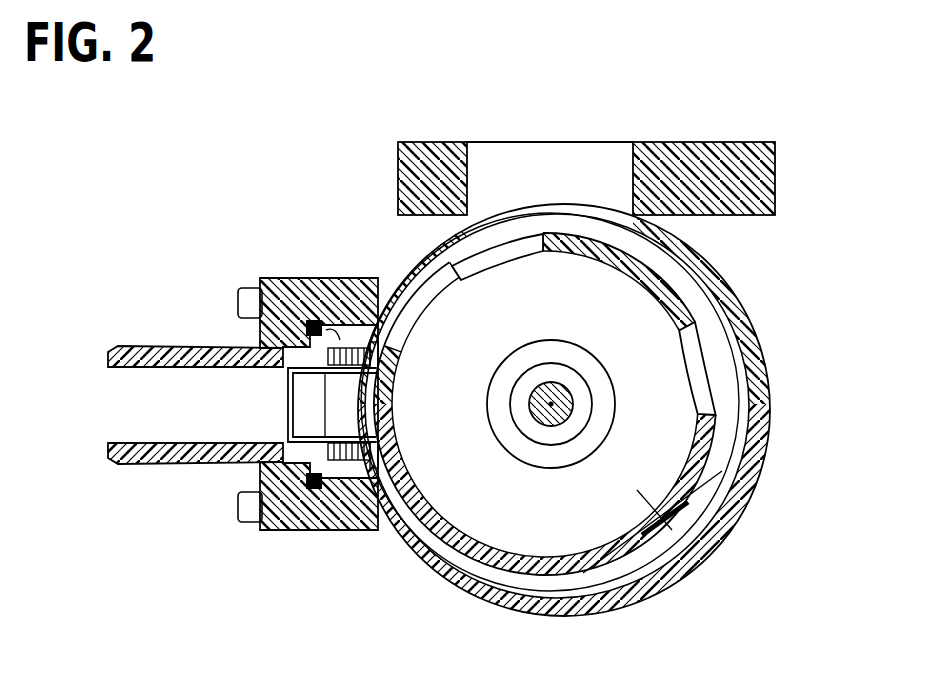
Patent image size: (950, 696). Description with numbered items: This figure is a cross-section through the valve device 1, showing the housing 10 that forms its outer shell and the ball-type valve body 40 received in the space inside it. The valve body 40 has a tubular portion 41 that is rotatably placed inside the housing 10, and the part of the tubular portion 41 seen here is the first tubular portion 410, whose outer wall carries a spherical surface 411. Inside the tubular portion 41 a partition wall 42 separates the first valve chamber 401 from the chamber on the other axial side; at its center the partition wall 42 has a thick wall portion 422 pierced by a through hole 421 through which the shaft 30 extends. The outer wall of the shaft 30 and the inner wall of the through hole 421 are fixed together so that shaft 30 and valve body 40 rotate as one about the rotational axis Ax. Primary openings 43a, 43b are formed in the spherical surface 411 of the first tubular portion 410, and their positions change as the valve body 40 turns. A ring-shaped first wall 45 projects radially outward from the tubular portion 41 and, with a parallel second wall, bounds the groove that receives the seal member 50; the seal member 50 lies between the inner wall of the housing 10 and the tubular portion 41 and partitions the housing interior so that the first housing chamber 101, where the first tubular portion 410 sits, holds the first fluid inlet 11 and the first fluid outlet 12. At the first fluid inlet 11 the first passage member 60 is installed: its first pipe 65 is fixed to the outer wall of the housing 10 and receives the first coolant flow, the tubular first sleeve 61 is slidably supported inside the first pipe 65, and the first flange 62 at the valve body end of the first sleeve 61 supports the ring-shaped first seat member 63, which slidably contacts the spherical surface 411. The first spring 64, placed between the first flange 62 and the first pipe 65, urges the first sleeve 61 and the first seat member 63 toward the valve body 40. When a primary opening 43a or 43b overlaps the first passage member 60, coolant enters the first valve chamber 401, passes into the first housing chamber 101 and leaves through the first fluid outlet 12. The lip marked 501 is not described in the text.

The valve device 1 is at (293, 80).
The housing 10 is at (690, 241).
The first housing chamber 101 is at (712, 358).
The first fluid inlet 11 is at (345, 338).
The first fluid outlet 12 is at (586, 168).
The shaft 30 is at (553, 424).
The valve body 40 is at (474, 562).
The first valve chamber 401 is at (612, 325).
The tubular portion 41 is at (737, 474).
The first tubular portion 410 is at (735, 476).
The spherical surface 411 is at (430, 550).
The partition wall 42 is at (600, 440).
The through hole 421 is at (558, 420).
The thick wall portion 422 is at (694, 460).
The primary opening 43a is at (487, 262).
The primary opening 43b is at (692, 338).
The first wall 45 is at (722, 392).
The seal member 50 is at (637, 490).
The seal lip 501 is at (638, 491).
The first passage member 60 is at (245, 418).
The first sleeve 61 is at (297, 385).
The first flange 62 is at (300, 330).
The first seat member 63 is at (348, 462).
The first spring 64 is at (326, 470).
The first pipe 65 is at (235, 447).
The rotational axis Ax is at (551, 406).